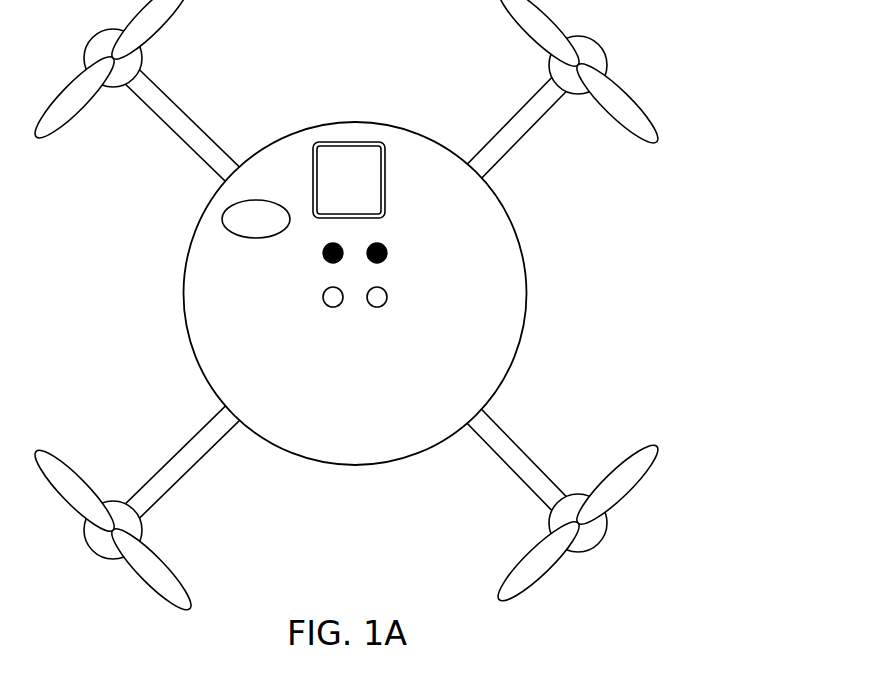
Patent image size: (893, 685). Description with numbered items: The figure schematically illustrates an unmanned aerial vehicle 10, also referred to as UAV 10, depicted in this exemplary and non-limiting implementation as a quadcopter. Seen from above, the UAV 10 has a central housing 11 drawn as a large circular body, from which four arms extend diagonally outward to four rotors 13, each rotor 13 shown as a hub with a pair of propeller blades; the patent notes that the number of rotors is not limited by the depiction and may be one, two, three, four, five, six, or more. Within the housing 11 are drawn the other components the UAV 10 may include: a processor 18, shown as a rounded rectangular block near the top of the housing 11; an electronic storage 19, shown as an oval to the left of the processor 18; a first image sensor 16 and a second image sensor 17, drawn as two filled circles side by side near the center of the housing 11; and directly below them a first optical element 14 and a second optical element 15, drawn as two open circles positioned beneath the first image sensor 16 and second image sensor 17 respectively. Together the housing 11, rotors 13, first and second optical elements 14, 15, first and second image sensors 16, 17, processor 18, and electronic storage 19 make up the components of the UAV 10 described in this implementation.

The unmanned aerial vehicle 10 is at (398, 316).
The housing 11 is at (202, 333).
The rotor 13 is at (620, 482).
The first optical element 14 is at (353, 304).
The second optical element 15 is at (402, 298).
The first image sensor 16 is at (352, 240).
The second image sensor 17 is at (398, 254).
The processor 18 is at (387, 152).
The electronic storage 19 is at (222, 216).